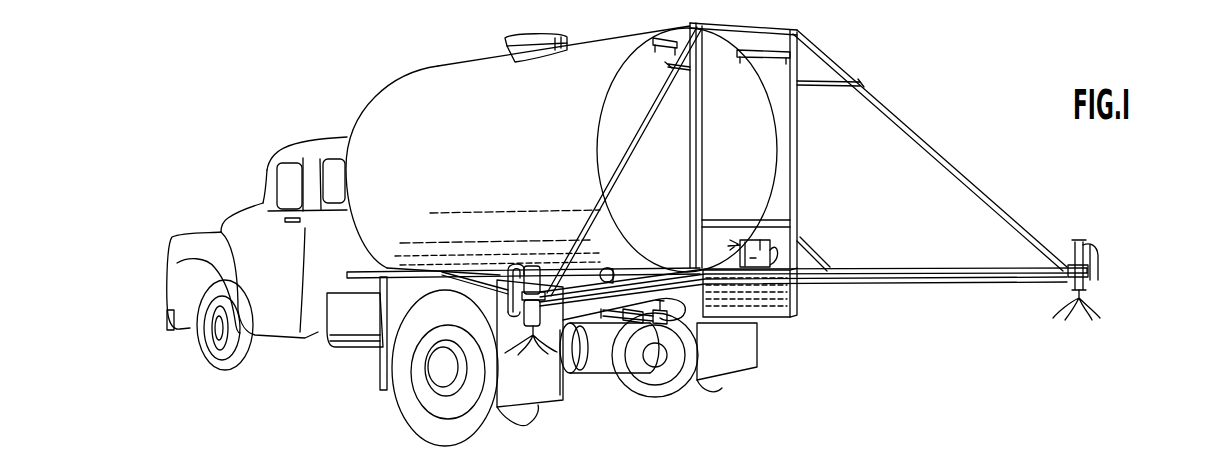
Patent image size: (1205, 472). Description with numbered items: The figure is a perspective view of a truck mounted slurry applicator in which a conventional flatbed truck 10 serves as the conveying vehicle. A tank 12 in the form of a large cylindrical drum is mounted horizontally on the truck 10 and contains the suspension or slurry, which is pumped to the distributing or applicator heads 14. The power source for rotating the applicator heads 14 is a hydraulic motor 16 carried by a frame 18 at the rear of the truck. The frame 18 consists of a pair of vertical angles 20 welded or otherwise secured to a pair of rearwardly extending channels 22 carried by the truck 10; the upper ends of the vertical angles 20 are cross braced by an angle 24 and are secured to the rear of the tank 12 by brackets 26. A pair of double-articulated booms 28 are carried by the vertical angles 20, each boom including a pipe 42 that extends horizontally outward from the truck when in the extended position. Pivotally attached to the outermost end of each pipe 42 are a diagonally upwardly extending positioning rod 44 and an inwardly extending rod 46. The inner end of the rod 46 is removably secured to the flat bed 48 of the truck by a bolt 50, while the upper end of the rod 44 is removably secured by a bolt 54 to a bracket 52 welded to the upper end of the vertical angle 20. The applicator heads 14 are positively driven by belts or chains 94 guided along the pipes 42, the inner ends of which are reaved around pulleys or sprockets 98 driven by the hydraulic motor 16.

The flatbed truck 10 is at (318, 118).
The tank 12 is at (438, 66).
The applicator heads 14 is at (531, 354).
The hydraulic motor 16 is at (750, 240).
The frame 18 is at (806, 231).
The vertical angles 20 is at (690, 143).
The channels 22 is at (706, 324).
The angle 24 is at (793, 27).
The brackets 26 is at (650, 42).
The double-articulated booms 28 is at (622, 266).
The pipe 42 is at (963, 282).
The positioning rods 44 is at (612, 175).
The inwardly extending rods 46 is at (452, 297).
The flat bed 48 is at (411, 268).
The bolt 50 is at (442, 270).
The bracket 52 is at (682, 70).
The bolt 54 is at (667, 65).
The belts or chains 94 is at (659, 267).
The pulleys or sprockets 98 is at (756, 274).